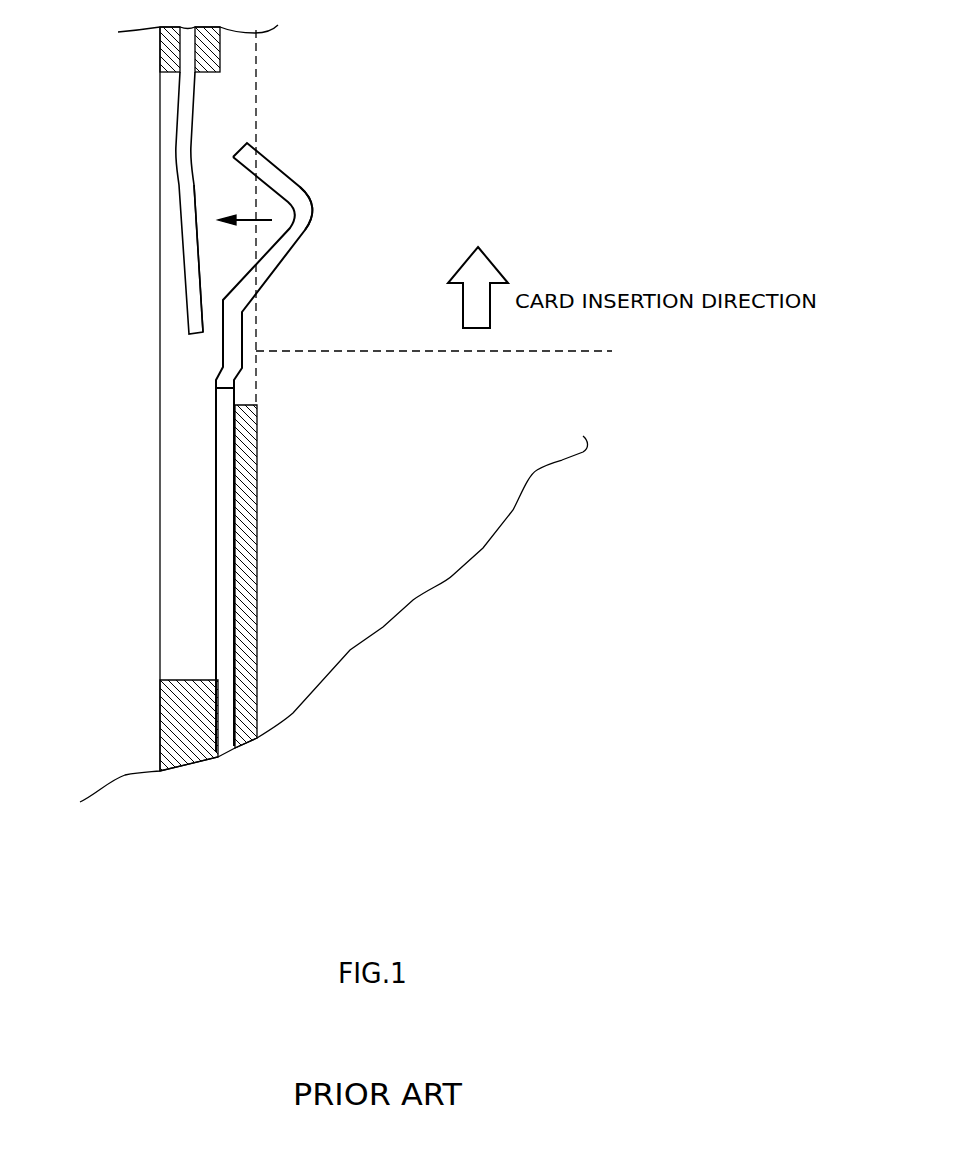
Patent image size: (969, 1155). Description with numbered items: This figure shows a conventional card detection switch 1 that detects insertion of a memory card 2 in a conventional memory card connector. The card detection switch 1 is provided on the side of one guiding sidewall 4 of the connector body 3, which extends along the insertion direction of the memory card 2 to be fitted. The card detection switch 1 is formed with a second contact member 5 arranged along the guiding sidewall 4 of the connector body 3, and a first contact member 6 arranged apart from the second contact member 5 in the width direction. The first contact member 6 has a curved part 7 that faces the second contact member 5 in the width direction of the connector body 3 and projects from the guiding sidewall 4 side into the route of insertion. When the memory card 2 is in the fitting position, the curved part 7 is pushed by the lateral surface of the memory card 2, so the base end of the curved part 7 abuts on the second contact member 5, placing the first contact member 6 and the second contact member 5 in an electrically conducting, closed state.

The card detection switch 1 is at (93, 137).
The memory card 2 is at (270, 363).
The connector body 3 is at (288, 108).
The guiding sidewall 4 is at (185, 507).
The second contact member 5 is at (176, 167).
The first contact member 6 is at (246, 283).
The curved part 7 is at (302, 232).